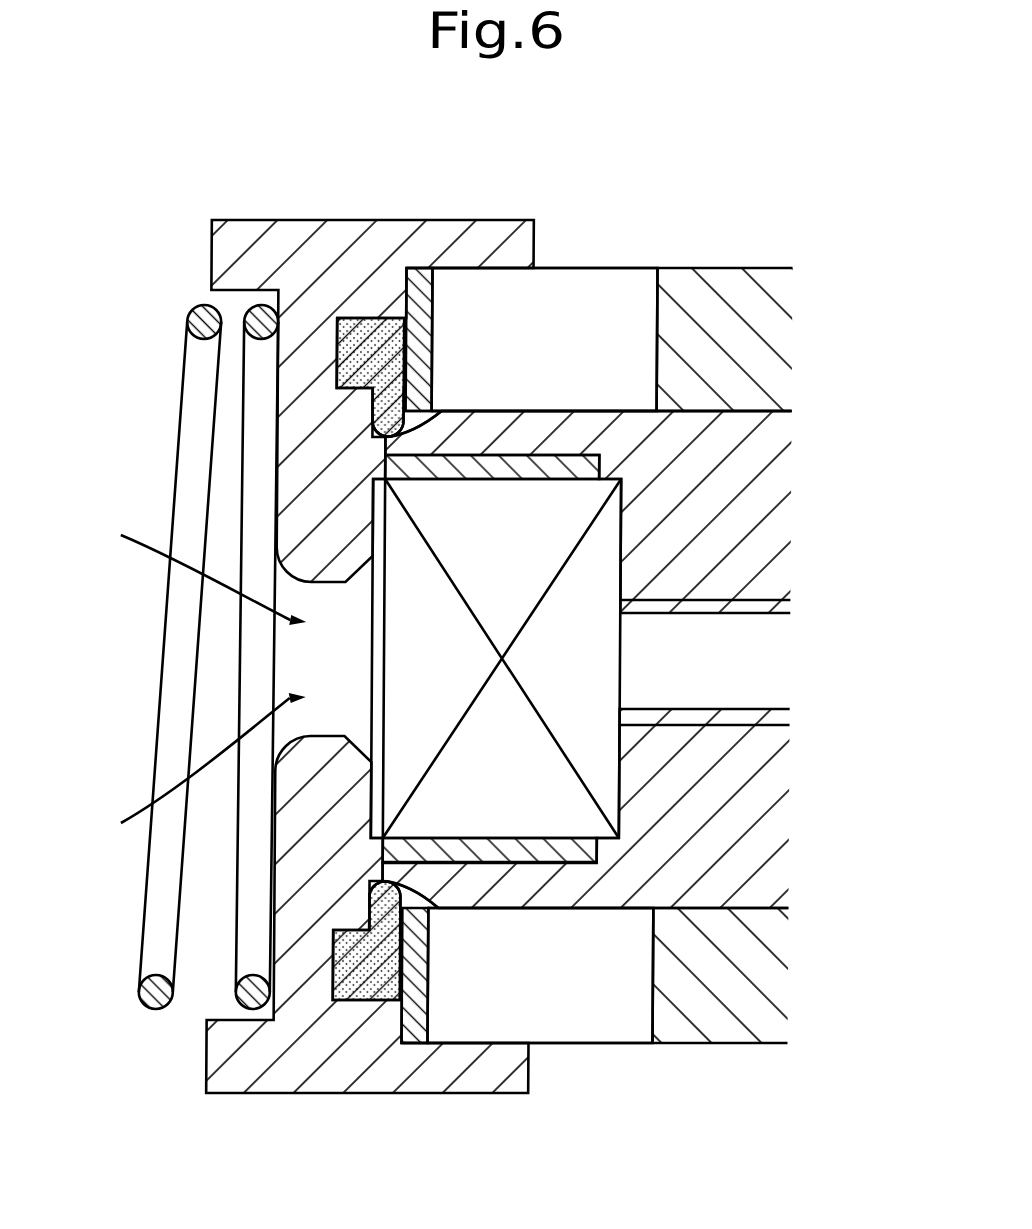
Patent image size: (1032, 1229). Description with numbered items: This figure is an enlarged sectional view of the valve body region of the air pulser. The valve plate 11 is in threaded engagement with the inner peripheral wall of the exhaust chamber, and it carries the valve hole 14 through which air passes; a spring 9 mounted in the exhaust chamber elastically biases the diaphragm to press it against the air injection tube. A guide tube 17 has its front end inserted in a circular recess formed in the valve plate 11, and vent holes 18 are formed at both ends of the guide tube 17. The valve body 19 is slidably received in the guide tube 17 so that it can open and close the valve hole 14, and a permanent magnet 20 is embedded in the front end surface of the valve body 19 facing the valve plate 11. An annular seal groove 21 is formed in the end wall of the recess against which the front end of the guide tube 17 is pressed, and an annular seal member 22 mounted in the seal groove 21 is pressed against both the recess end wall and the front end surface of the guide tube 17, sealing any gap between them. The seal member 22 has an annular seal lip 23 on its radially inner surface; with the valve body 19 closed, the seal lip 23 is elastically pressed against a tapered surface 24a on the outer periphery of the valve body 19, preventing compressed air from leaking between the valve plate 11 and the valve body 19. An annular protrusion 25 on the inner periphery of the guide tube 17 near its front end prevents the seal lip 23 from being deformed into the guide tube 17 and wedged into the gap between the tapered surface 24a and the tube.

The spring 9 is at (180, 717).
The valve plate 11 is at (230, 250).
The valve hole 14 is at (310, 652).
The guide tube 17 is at (720, 283).
The vent holes 18 is at (590, 285).
The valve body 19 is at (760, 527).
The permanent magnet 20 is at (410, 766).
The annular seal groove 21 is at (357, 317).
The annular seal member 22 is at (378, 333).
The annular seal lip 23 is at (370, 418).
The tapered surface 24a is at (433, 410).
The annular protrusion 25 is at (418, 403).